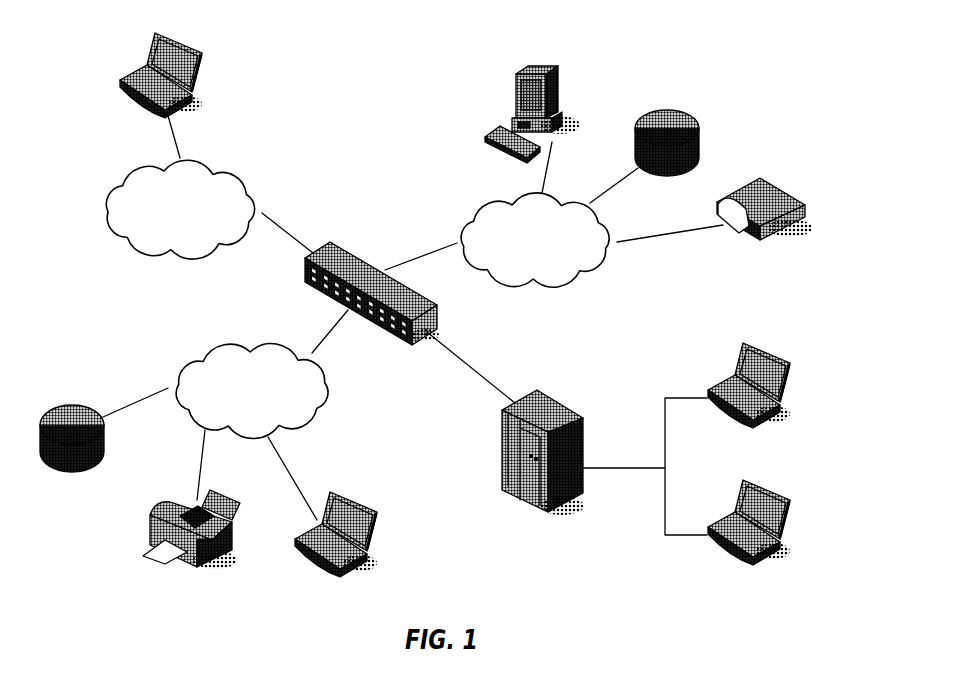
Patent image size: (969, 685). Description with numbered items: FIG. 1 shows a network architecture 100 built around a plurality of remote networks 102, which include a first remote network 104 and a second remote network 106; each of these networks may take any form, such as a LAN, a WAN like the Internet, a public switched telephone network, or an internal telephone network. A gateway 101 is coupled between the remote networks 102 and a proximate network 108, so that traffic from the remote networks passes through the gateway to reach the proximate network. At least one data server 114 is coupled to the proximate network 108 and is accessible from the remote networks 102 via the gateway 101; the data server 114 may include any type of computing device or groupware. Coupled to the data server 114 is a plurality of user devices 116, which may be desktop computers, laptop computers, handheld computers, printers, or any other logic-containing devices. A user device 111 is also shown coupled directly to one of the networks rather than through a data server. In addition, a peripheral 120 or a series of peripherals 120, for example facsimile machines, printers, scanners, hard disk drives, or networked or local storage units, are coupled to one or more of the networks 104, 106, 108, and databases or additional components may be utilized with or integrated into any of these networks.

The network architecture 100 is at (383, 87).
The gateway 101 is at (395, 338).
The remote networks 102 is at (146, 284).
The first remote network 104 is at (250, 338).
The second remote network 106 is at (243, 172).
The proximate network 108 is at (471, 208).
The user device 111 is at (563, 83).
The data server 114 is at (583, 413).
The user devices 116 is at (198, 44).
The peripheral 120 is at (695, 114).